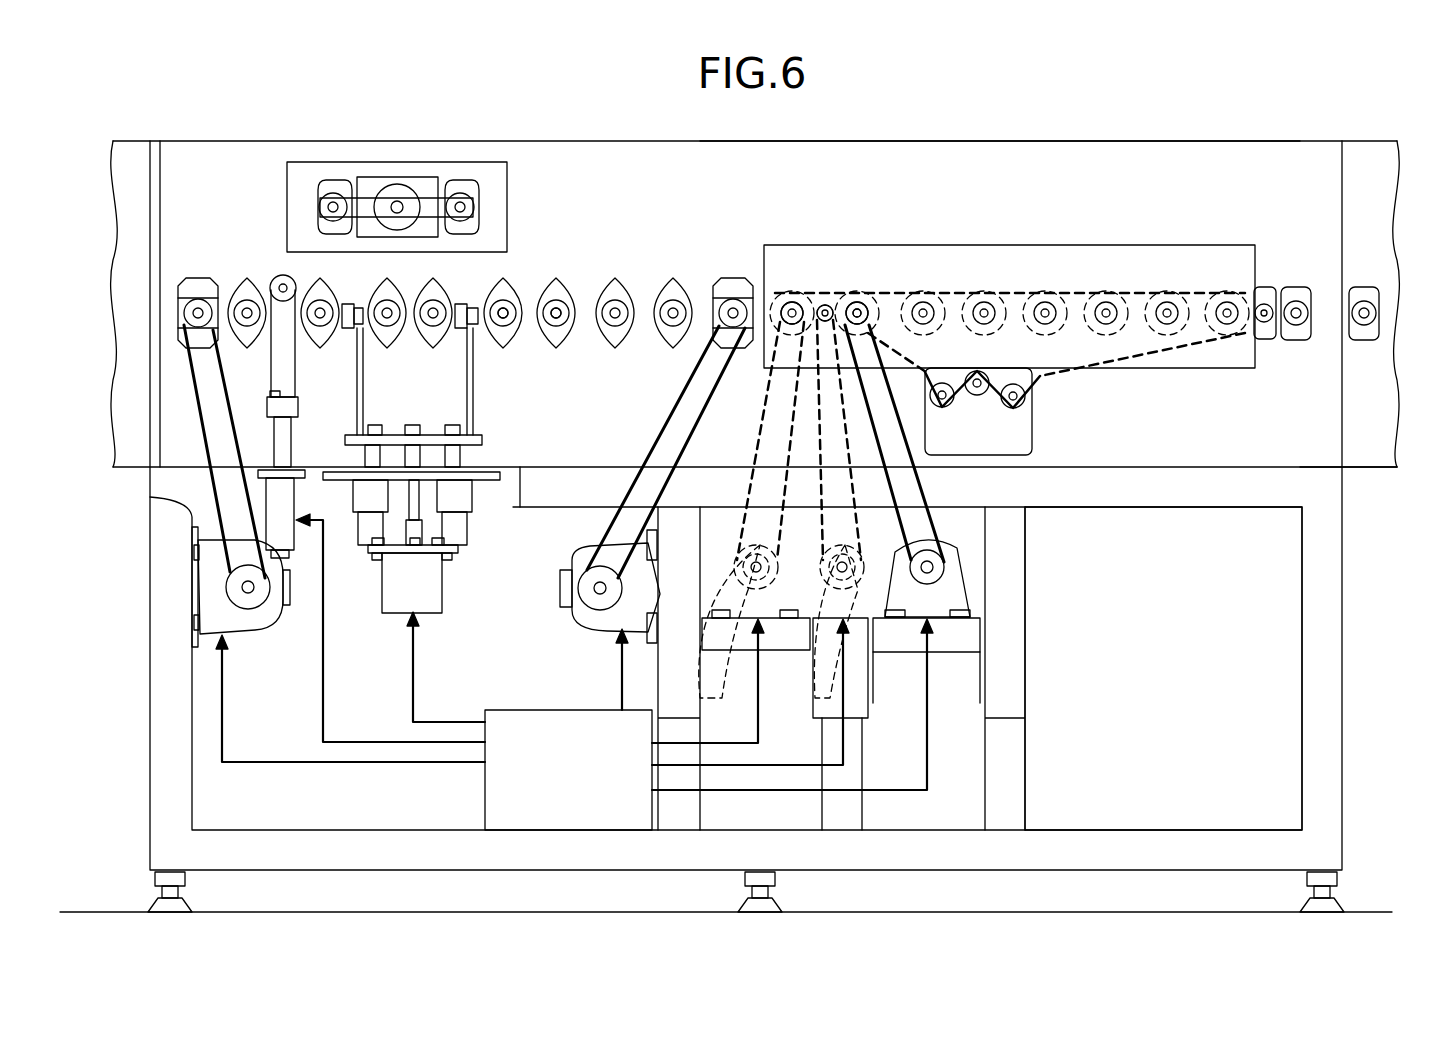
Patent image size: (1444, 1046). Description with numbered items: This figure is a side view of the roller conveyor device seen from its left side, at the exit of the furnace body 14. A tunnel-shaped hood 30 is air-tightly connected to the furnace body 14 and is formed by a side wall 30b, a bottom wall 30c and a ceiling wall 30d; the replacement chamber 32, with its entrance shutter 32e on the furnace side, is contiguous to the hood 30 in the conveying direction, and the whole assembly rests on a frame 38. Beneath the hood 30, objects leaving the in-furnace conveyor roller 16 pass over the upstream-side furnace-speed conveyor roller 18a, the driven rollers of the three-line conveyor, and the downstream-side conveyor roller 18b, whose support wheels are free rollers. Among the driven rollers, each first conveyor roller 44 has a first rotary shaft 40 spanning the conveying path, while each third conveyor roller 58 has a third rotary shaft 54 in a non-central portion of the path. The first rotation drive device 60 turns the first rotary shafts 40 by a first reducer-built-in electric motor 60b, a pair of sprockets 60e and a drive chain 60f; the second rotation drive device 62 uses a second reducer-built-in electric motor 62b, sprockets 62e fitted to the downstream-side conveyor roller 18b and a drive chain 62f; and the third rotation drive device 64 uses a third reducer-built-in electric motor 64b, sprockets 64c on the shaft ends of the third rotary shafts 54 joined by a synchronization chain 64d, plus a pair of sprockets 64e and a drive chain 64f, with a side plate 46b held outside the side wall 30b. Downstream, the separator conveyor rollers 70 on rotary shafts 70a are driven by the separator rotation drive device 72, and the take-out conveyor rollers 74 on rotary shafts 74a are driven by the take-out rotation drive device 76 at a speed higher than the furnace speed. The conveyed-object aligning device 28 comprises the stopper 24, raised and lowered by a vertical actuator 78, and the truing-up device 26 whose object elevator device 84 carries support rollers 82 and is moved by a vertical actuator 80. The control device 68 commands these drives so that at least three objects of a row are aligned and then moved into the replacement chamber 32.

The furnace body 14 is at (1366, 152).
The in-furnace conveyor roller 16 is at (1372, 318).
The upstream-side furnace-speed conveyor roller 18a is at (1300, 322).
The downstream-side conveyor roller 18b is at (792, 305).
The stopper 24 is at (275, 280).
The truing-up device 26 is at (368, 178).
The conveyed-object aligning device 28 is at (510, 150).
The hood 30 is at (1200, 127).
The side wall 30b is at (1330, 405).
The bottom wall 30c is at (1165, 508).
The ceiling wall 30d is at (1050, 140).
The replacement chamber 32 is at (140, 129).
The entrance shutter 32e is at (157, 145).
The frame 38 is at (1330, 575).
The first rotary shaft 40 is at (822, 305).
The first conveyor roller 44 is at (828, 183).
The side plate 46b is at (1230, 250).
The third rotary shaft 54 is at (858, 305).
The third conveyor roller 58 is at (887, 183).
The first rotation drive device 60 is at (857, 626).
The first reducer-built-in electric motor 60b is at (812, 685).
The sprockets 60e is at (830, 303).
The drive chain 60f is at (858, 403).
The second rotation drive device 62 is at (743, 529).
The second reducer-built-in electric motor 62b is at (756, 661).
The sprockets 62e is at (780, 300).
The drive chain 62f is at (762, 400).
The third rotation drive device 64 is at (967, 534).
The third reducer-built-in electric motor 64b is at (950, 600).
The sprockets 64c is at (986, 302).
The synchronization chain 64d is at (1040, 390).
The sprockets 64e is at (868, 305).
The drive chain 64f is at (940, 490).
The control device 68 is at (485, 800).
The separator conveyor roller 70 is at (568, 271).
The rotary shaft 70a is at (557, 325).
The separator rotation drive device 72 is at (585, 630).
The take-out conveyor roller 74 is at (190, 273).
The rotary shaft 74a is at (504, 325).
The take-out rotation drive device 76 is at (243, 645).
The vertical actuator 78 is at (293, 490).
The vertical actuator 80 is at (443, 585).
The support roller 82 is at (462, 325).
The object elevator device 84 is at (483, 409).